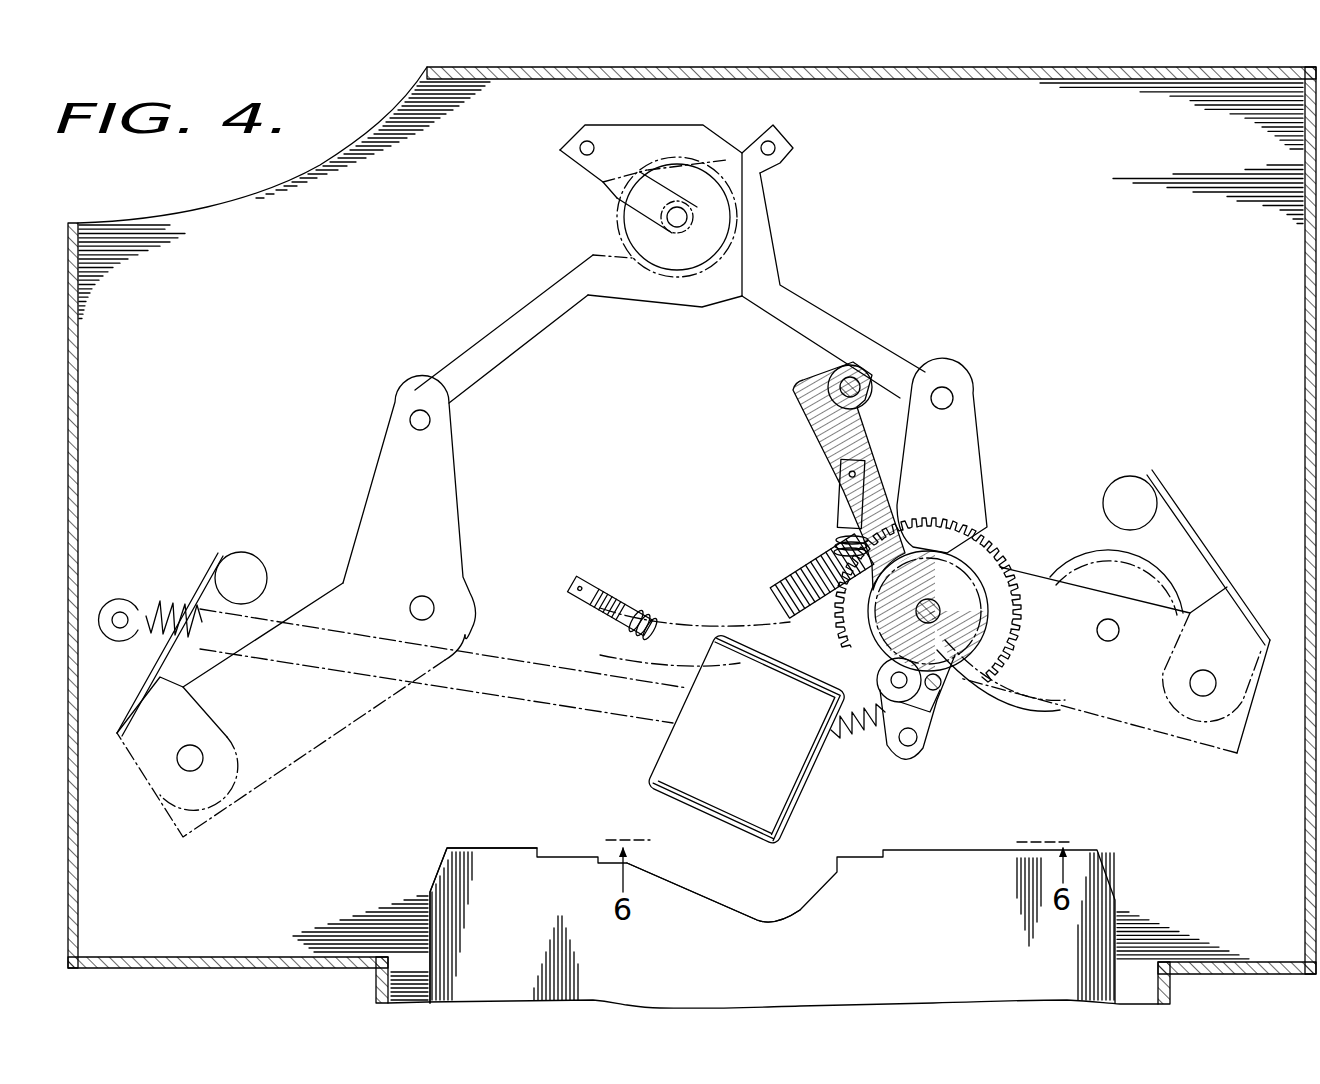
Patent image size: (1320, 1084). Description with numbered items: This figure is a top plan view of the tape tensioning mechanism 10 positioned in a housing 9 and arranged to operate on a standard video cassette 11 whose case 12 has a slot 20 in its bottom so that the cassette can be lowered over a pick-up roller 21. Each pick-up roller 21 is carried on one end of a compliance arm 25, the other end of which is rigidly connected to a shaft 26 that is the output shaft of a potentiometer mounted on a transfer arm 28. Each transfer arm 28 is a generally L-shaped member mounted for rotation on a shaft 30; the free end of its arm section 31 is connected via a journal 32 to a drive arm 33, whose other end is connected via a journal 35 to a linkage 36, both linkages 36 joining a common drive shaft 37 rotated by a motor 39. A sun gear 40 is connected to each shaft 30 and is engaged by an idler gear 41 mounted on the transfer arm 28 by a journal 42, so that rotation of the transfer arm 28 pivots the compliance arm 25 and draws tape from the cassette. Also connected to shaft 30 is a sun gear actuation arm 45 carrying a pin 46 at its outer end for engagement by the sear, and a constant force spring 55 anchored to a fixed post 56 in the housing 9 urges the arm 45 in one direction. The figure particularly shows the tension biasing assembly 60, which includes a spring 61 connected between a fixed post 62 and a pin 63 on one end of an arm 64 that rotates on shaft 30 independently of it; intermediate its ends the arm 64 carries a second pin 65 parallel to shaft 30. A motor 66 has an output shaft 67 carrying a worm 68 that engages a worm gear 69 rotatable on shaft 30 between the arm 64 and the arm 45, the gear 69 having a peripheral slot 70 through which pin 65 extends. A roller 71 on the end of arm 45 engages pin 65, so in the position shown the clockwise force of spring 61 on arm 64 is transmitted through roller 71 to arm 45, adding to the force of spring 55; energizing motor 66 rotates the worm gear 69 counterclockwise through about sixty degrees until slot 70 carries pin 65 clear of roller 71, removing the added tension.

The housing 9 is at (1305, 337).
The mechanism 10 is at (1035, 270).
The video cassette 11 is at (1137, 847).
The case 12 is at (447, 890).
The slot 20 is at (723, 910).
The pick-up roller 21 is at (268, 578).
The compliance arm 25 is at (215, 575).
The shaft 26 is at (195, 748).
The transfer arm 28 is at (340, 745).
The shaft 30 is at (410, 608).
The arm section 31 is at (370, 487).
The journal 32 is at (432, 420).
The drive arm 33 is at (497, 325).
The journal 35 is at (580, 148).
The linkage 36 is at (625, 190).
The drive shaft 37 is at (690, 218).
The motor 39 is at (625, 232).
The sun gear 40 is at (985, 713).
The idler gear 41 is at (1103, 555).
The journal 42 is at (1125, 622).
The sun gear actuation arm 45 is at (830, 440).
The pin 46 is at (860, 385).
The constant force spring 55 is at (640, 640).
The fixed post 56 is at (585, 588).
The tension biasing assembly 60 is at (760, 575).
The spring 61 is at (535, 705).
The fixed post 62 is at (122, 606).
The pin 63 is at (920, 752).
The arm 64 is at (940, 685).
The second pin 65 is at (940, 668).
The motor 66 is at (690, 748).
The output shaft 67 is at (793, 623).
The worm 68 is at (815, 550).
The worm gear 69 is at (1037, 503).
The slot 70 is at (833, 690).
The roller 71 is at (925, 712).